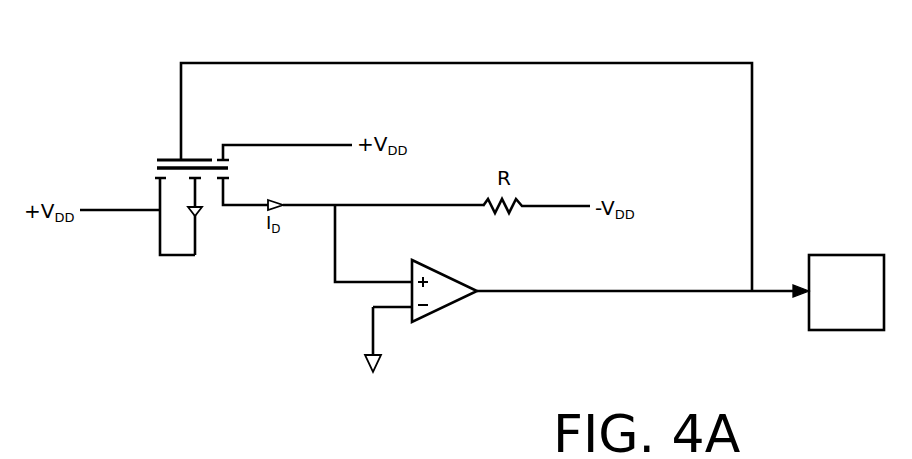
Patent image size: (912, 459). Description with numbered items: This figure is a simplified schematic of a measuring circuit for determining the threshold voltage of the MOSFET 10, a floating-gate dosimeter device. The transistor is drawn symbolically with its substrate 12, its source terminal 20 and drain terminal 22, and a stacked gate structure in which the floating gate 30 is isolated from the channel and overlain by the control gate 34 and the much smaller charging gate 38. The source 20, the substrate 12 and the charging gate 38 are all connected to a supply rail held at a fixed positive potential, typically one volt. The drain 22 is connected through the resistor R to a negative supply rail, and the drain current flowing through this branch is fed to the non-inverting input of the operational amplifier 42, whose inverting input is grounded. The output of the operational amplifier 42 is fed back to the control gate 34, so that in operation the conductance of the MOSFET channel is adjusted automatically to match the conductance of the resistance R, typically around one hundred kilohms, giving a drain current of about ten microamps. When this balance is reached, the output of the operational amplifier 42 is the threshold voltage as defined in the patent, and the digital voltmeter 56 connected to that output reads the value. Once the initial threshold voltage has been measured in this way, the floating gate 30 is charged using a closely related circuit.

The MOSFET 10 is at (152, 74).
The substrate 12 is at (200, 186).
The source terminal 20 is at (158, 179).
The drain terminal 22 is at (227, 192).
The floating gate 30 is at (157, 166).
The control gate 34 is at (178, 158).
The charging gate 38 is at (219, 146).
The operational amplifier 42 is at (446, 306).
The digital voltmeter 56 is at (828, 255).